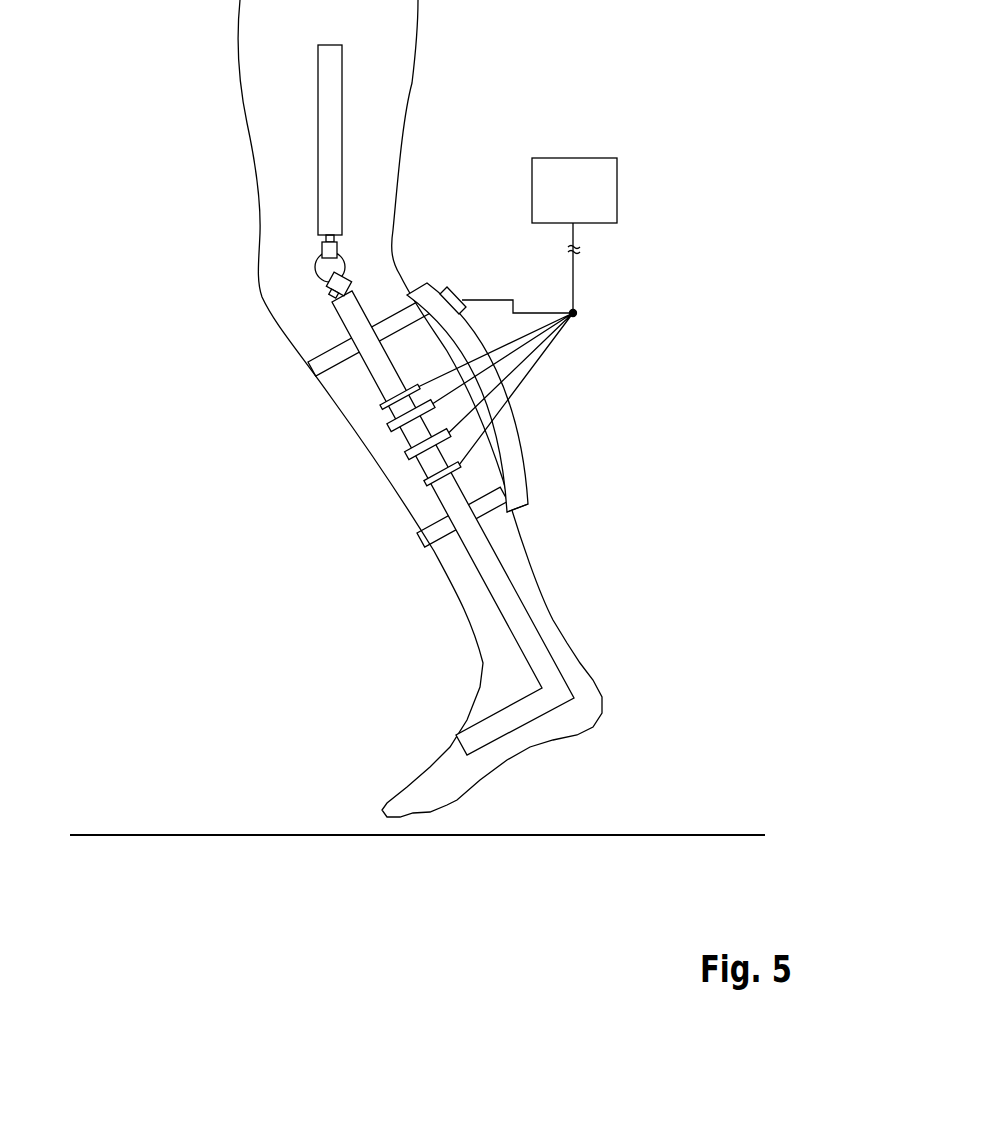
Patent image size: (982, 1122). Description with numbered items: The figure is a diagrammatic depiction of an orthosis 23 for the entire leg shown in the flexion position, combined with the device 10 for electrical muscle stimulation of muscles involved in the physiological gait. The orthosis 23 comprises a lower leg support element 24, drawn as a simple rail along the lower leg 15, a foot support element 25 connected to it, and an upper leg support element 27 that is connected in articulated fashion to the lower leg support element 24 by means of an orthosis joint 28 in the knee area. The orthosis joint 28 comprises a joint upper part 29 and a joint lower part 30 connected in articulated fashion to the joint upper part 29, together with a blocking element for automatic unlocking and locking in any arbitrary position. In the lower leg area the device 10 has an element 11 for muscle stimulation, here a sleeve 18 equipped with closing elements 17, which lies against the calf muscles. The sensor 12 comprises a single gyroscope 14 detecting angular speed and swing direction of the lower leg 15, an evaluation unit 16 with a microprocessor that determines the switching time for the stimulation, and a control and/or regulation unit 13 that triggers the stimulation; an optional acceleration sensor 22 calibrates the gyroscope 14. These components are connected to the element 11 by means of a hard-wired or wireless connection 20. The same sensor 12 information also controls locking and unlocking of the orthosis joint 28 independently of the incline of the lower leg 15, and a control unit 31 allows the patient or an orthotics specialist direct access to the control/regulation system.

The device 10 is at (435, 519).
The element for electrical muscle stimulation 11 is at (419, 519).
The sensor 12 is at (452, 523).
The control and/or regulation unit 13 is at (386, 430).
The gyroscope 14 is at (396, 428).
The lower leg 15 is at (527, 525).
The evaluation unit 16 is at (427, 458).
The closing elements 17 is at (308, 339).
The sleeve 18 is at (497, 433).
The connection 20 is at (577, 283).
The acceleration sensor 22 is at (427, 480).
The orthosis 23 is at (477, 523).
The lower leg support element 24 is at (477, 523).
The foot support element 25 is at (482, 732).
The upper leg support element 27 is at (333, 110).
The orthosis joint 28 is at (343, 173).
The joint upper part 29 is at (321, 247).
The joint lower part 30 is at (330, 286).
The control unit 31 is at (618, 182).